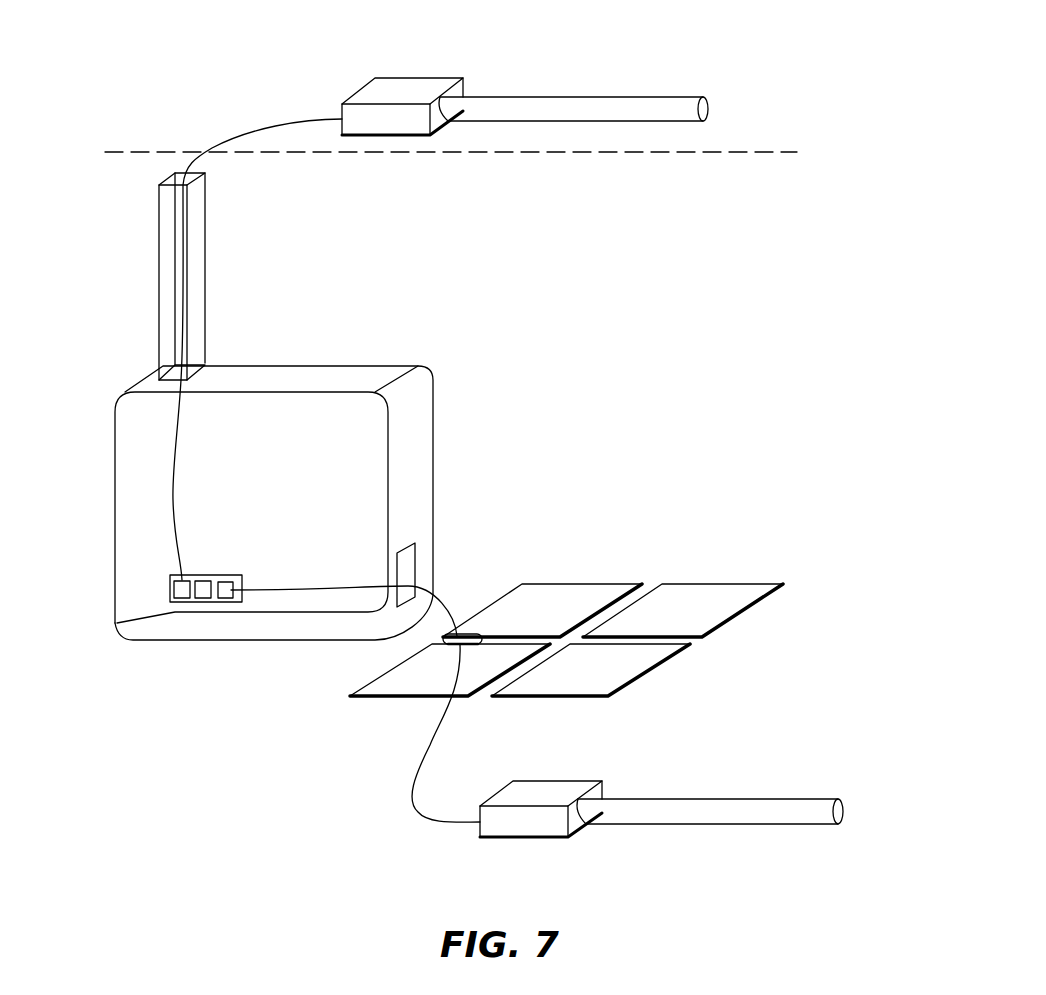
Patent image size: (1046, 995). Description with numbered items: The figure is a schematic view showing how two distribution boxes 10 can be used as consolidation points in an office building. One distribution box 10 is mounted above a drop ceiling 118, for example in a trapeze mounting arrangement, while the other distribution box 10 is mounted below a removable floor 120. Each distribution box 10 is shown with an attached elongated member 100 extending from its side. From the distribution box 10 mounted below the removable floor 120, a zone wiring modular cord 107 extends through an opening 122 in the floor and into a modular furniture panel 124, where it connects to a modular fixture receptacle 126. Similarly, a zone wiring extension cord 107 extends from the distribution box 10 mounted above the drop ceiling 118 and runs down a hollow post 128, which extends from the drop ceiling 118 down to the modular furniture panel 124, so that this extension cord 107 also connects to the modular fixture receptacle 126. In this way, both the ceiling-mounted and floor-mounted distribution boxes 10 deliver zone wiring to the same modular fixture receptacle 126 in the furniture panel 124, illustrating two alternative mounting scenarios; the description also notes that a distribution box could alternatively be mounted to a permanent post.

The distribution box 10 is at (428, 67).
The probe/wand 100 is at (600, 85).
The zone wiring modular cord 107 is at (256, 130).
The drop ceiling 118 is at (637, 165).
The hollow post 128 is at (198, 285).
The modular furniture panel 124 is at (444, 453).
The modular fixture receptacle 126 is at (200, 577).
The opening 122 is at (458, 634).
The removable floor 120 is at (748, 576).